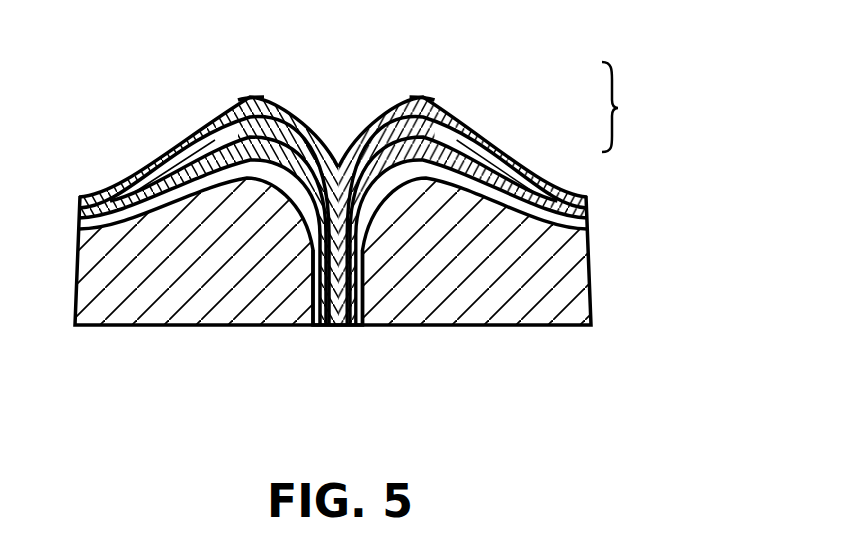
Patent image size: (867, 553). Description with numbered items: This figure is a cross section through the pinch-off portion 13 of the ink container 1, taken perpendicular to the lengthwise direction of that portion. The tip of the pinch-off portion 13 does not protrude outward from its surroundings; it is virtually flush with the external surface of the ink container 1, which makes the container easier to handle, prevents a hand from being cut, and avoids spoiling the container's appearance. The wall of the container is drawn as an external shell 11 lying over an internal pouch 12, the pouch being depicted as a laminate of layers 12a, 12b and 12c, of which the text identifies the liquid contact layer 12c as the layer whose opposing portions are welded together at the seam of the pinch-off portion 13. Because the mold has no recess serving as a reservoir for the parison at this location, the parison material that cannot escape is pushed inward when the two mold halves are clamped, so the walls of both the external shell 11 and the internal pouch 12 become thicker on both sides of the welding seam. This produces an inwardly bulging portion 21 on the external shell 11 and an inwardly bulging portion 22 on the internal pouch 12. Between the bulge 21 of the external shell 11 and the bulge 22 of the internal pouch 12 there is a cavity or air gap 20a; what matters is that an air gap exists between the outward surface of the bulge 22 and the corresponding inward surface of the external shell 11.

The ink container 1 is at (116, 352).
The external shell 11 is at (510, 318).
The internal pouch 12 is at (629, 107).
The first layer of recording layer 12a is at (488, 172).
The second layer of recording layer 12b is at (490, 147).
The liquid contact layer 12c is at (483, 121).
The pinch-off portion 13 is at (344, 330).
The air gap 20a is at (272, 148).
The inwardly bulging portion 21 is at (169, 149).
The inwardly bulging portion 22 is at (242, 96).